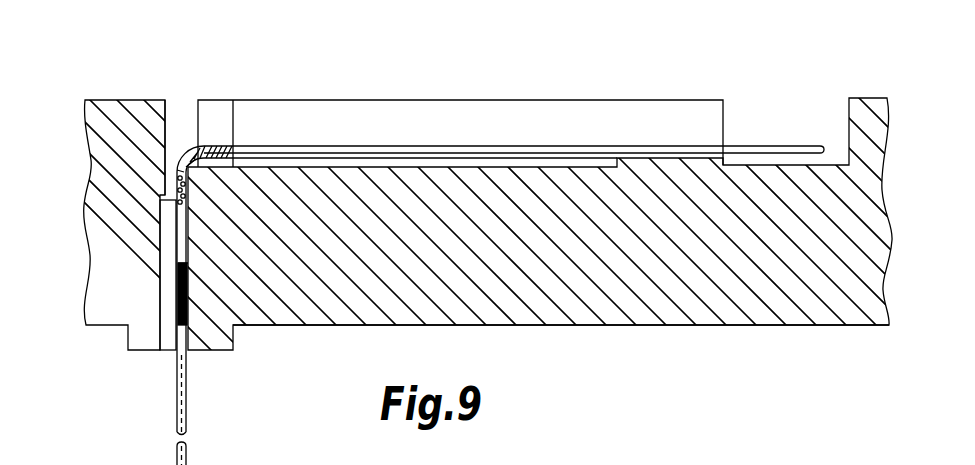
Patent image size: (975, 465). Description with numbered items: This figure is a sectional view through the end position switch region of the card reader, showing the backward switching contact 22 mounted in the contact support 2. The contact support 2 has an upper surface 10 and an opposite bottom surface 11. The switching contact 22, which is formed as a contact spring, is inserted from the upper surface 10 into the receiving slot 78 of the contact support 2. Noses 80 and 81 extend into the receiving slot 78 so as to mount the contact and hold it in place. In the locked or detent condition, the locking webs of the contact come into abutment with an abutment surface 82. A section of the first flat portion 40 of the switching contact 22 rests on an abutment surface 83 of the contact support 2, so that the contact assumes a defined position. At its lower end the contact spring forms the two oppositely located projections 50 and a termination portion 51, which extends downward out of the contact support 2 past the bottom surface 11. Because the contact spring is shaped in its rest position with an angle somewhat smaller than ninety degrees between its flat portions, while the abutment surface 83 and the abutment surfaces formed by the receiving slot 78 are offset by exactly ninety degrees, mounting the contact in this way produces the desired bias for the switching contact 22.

The contact support 2 is at (714, 298).
The upper surface 10 is at (108, 100).
The bottom surface 11 is at (598, 325).
The switching contact 22 is at (391, 138).
The first flat portion 40 is at (761, 135).
The projections 50 is at (166, 293).
The termination portion 51 is at (182, 413).
The receiving slot 78 is at (167, 122).
The nose 80 is at (182, 258).
The nose 81 is at (172, 192).
The abutment surface 82 is at (176, 279).
The abutment surface 83 is at (656, 152).